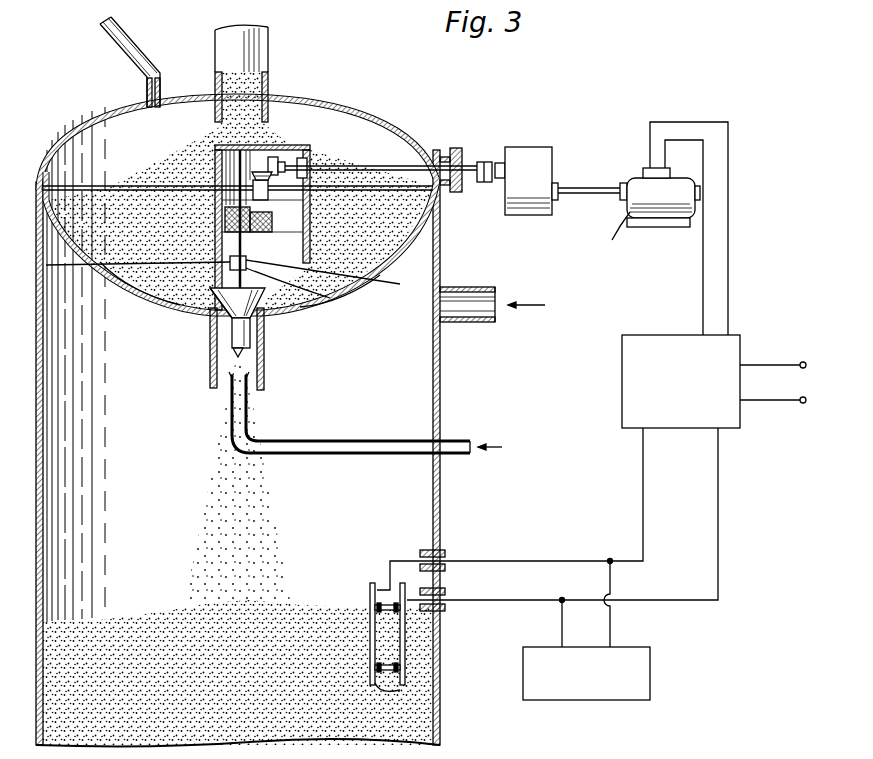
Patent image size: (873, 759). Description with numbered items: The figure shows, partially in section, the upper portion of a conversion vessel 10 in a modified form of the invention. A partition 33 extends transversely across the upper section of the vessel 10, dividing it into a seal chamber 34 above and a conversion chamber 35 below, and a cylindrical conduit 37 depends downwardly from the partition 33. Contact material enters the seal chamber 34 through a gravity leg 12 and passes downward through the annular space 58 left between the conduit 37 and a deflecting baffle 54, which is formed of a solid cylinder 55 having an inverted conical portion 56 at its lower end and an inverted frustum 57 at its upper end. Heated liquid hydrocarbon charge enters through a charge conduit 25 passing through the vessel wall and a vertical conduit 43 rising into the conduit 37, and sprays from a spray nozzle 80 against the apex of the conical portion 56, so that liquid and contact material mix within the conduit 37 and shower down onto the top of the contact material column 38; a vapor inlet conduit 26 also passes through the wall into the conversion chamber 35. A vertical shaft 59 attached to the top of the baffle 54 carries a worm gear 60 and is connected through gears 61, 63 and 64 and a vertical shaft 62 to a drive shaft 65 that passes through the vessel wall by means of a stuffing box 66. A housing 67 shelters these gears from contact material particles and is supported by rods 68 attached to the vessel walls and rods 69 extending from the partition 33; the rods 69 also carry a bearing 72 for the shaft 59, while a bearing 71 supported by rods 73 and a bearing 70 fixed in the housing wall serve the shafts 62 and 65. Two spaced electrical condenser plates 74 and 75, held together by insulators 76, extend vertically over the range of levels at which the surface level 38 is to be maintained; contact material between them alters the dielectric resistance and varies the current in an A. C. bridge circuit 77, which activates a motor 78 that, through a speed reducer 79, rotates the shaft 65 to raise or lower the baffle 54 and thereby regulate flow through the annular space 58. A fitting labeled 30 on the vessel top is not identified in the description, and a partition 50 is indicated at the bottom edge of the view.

The conversion vessel 10 is at (440, 374).
The gravity leg 12 is at (268, 40).
The liquid hydrocarbon charge conduit 25 is at (456, 440).
The vapor inlet conduit 26 is at (492, 285).
The vent pipe 30 is at (134, 37).
The partition 33 is at (378, 274).
The seal chamber 34 is at (364, 113).
The conversion chamber 35 is at (418, 718).
The cylindrical conduit 37 is at (265, 372).
The surface level of contact material column 38 is at (415, 638).
The vertical conduit 43 is at (248, 425).
The partition 50 is at (237, 679).
The deflecting baffle 54 is at (213, 330).
The solid cylinder 55 is at (233, 338).
The conical portion 56 is at (237, 357).
The inverted frustum 57 is at (210, 302).
The annular space 58 is at (265, 324).
The vertical shaft 59 is at (196, 308).
The worm gear 60 is at (222, 218).
The gear 61 is at (272, 232).
The vertical shaft 62 is at (274, 224).
The gear 63 is at (272, 158).
The gear 64 is at (270, 176).
The drive shaft 65 is at (393, 164).
The stuffing box 66 is at (455, 147).
The housing 67 is at (304, 151).
The rods 68 is at (62, 150).
The rods 69 is at (141, 290).
The bearing 70 is at (309, 163).
The bearing 71 is at (312, 183).
The bearing 72 is at (324, 300).
The rods 73 is at (240, 186).
The electrical condenser plate 74 is at (406, 624).
The electrical condenser plate 75 is at (368, 596).
The insulators 76 is at (400, 690).
The A. C. bridge circuit 77 is at (741, 335).
The motor 78 is at (629, 213).
The speed reducer 79 is at (528, 167).
The spray nozzle 80 is at (230, 378).